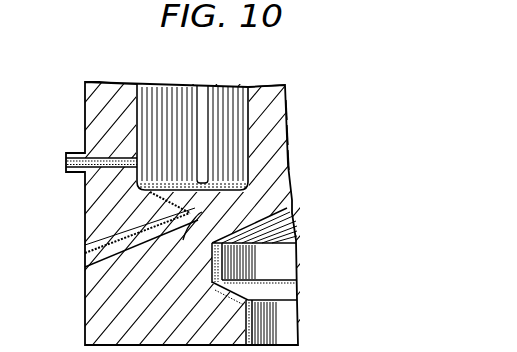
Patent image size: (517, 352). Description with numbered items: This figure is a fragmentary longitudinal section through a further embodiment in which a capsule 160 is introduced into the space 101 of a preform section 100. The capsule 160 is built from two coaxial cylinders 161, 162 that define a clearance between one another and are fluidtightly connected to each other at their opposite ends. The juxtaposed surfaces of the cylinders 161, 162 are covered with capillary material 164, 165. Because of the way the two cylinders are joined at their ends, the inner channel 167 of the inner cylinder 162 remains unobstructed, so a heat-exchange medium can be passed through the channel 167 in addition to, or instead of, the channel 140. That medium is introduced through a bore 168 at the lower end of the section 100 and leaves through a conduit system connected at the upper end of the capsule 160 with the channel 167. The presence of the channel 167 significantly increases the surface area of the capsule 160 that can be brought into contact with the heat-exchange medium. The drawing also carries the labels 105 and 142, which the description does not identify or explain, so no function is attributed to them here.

The preform section 100 is at (82, 232).
The space 101 is at (180, 240).
The outer layer 105 is at (287, 110).
The channel 140 is at (86, 106).
The strip 142 is at (63, 158).
The capsule 160 is at (293, 214).
The outer cylinder 161 is at (290, 162).
The inner cylinder 162 is at (286, 86).
The capillary material 164 is at (288, 135).
The capillary material 165 is at (170, 86).
The inner channel 167 is at (200, 87).
The bore 168 is at (85, 253).